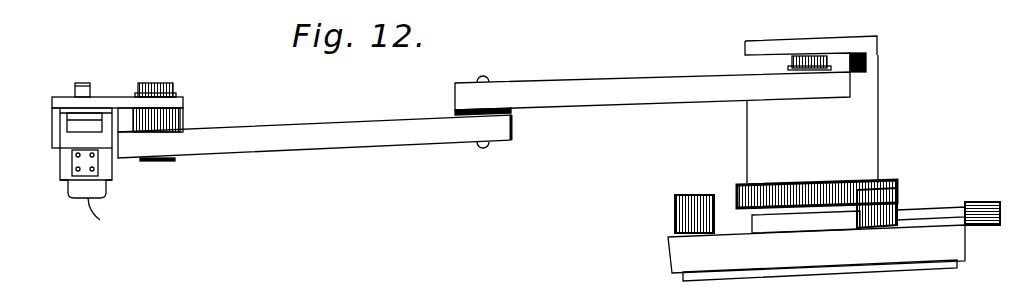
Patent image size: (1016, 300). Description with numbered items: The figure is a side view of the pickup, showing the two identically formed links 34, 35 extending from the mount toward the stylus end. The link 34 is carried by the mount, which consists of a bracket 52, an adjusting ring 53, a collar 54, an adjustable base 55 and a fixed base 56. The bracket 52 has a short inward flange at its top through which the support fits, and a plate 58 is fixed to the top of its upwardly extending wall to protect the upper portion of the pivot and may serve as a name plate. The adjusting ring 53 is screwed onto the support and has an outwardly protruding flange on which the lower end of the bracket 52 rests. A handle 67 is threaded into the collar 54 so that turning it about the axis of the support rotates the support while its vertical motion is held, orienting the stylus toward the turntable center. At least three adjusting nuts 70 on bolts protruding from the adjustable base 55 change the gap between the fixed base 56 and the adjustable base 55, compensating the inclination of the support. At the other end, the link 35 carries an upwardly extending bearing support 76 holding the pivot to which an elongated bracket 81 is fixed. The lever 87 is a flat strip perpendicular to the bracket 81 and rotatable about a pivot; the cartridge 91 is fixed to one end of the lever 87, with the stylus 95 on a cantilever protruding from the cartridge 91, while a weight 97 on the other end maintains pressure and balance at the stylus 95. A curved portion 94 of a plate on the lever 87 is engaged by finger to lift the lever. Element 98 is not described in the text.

The link 34 is at (678, 82).
The link 35 is at (193, 150).
The bracket 52 is at (873, 118).
The adjusting ring 53 is at (750, 187).
The collar 54 is at (817, 220).
The adjustable base 55 is at (750, 262).
The fixed base 56 is at (885, 268).
The plate 58 is at (785, 47).
The handle 67 is at (923, 212).
The adjusting nuts 70 is at (679, 223).
The bearing support 76 is at (181, 112).
The bracket 81 is at (122, 98).
The lever 87 is at (67, 126).
The cartridge 91 is at (68, 181).
The curved portion 94 is at (88, 83).
The stylus 95 is at (104, 214).
The weight 97 is at (61, 139).
The slot 98 is at (70, 111).